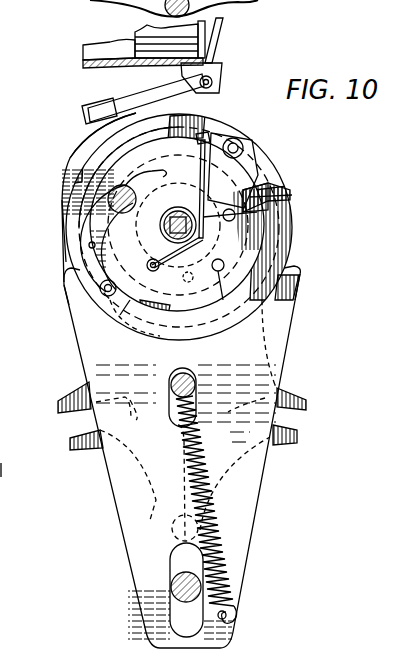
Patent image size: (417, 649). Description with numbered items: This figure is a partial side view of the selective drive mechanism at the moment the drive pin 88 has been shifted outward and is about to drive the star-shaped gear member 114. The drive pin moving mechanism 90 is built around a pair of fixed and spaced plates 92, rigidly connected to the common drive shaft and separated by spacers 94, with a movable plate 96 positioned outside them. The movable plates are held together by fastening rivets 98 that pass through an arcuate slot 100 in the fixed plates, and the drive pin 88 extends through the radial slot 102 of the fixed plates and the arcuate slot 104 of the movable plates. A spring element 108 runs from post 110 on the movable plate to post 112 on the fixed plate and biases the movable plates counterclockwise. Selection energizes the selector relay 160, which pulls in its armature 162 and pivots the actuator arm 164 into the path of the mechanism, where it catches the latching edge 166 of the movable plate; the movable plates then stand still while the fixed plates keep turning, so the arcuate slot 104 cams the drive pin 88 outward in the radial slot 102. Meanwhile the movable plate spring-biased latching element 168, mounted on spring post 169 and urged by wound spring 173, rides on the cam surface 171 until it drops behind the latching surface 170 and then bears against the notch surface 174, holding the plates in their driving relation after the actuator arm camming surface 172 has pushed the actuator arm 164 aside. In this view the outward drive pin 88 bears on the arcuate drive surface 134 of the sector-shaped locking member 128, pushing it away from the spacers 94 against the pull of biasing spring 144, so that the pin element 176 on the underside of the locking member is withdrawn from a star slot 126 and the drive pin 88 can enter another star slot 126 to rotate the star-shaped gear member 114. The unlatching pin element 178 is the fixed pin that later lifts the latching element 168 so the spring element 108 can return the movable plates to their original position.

The selector relay 160 is at (140, 30).
The armature 162 is at (225, 30).
The actuator arm 164 is at (100, 100).
The actuator arm camming surface 172 is at (78, 152).
The movable plate 96 is at (68, 170).
The unlatching pin element 178 is at (124, 186).
The latching edge 166 is at (60, 205).
The drive pin moving mechanism 90 is at (54, 246).
The arcuate slot 104 is at (90, 246).
The spacer 94 is at (142, 238).
The radial slot 102 is at (100, 287).
The drive pin 88 is at (72, 292).
The post 110 is at (126, 320).
The cam surface 171 is at (180, 334).
The fastening rivet 98 is at (236, 216).
The post 112 is at (204, 132).
The wound spring 173 is at (217, 146).
The spring post 169 is at (243, 147).
The movable plate spring-biased latching element 168 is at (250, 163).
The fixed and spaced plate 92 is at (278, 190).
The latching surface 170 is at (292, 196).
The notch surface 174 is at (264, 202).
The arcuate slot 100 is at (284, 232).
The spring element 108 is at (252, 268).
The arcuate drive surface 134 is at (303, 262).
The sector-shaped locking member 128 is at (287, 357).
The star-shaped gear member 114 is at (290, 398).
The star slot 126 is at (277, 440).
The pin element 176 is at (172, 540).
The biasing spring 144 is at (232, 560).